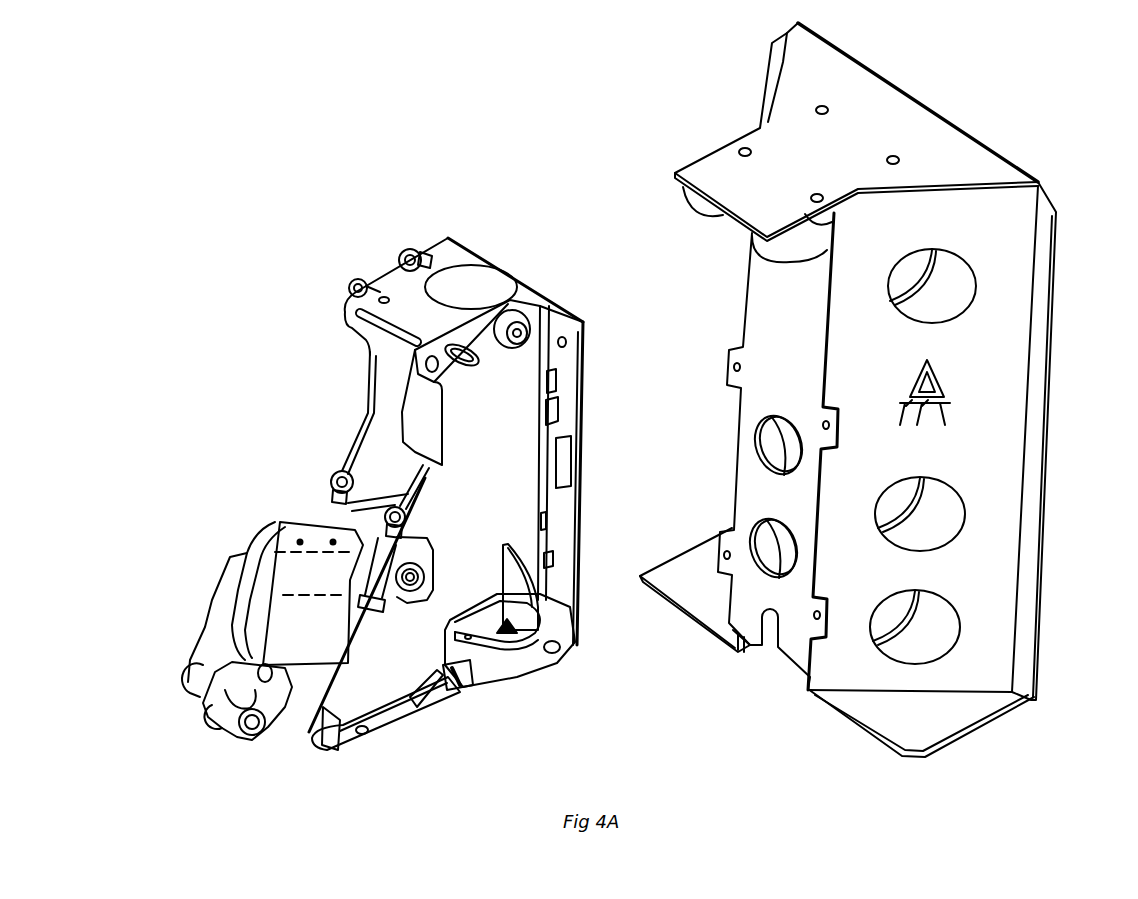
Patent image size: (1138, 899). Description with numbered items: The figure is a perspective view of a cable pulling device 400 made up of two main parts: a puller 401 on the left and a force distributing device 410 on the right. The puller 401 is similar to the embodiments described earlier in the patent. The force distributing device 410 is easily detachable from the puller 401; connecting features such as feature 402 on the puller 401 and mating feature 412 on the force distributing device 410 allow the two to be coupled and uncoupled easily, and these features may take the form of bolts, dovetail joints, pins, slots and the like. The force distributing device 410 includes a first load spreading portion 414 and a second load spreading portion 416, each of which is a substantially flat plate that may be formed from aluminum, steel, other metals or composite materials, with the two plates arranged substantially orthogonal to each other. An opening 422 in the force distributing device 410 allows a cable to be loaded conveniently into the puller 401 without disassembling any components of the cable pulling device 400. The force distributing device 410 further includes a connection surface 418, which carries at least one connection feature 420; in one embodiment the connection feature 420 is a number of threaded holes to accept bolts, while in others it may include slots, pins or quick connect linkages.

The cable pulling device 400 is at (365, 120).
The puller 401 is at (367, 433).
The connecting feature 402 is at (557, 390).
The force distributing device 410 is at (750, 305).
The mating feature 412 is at (840, 440).
The first load spreading portion 414 is at (1050, 398).
The second load spreading portion 416 is at (888, 753).
The connection surface 418 is at (920, 133).
The connection feature 420 is at (822, 108).
The opening 422 is at (767, 653).